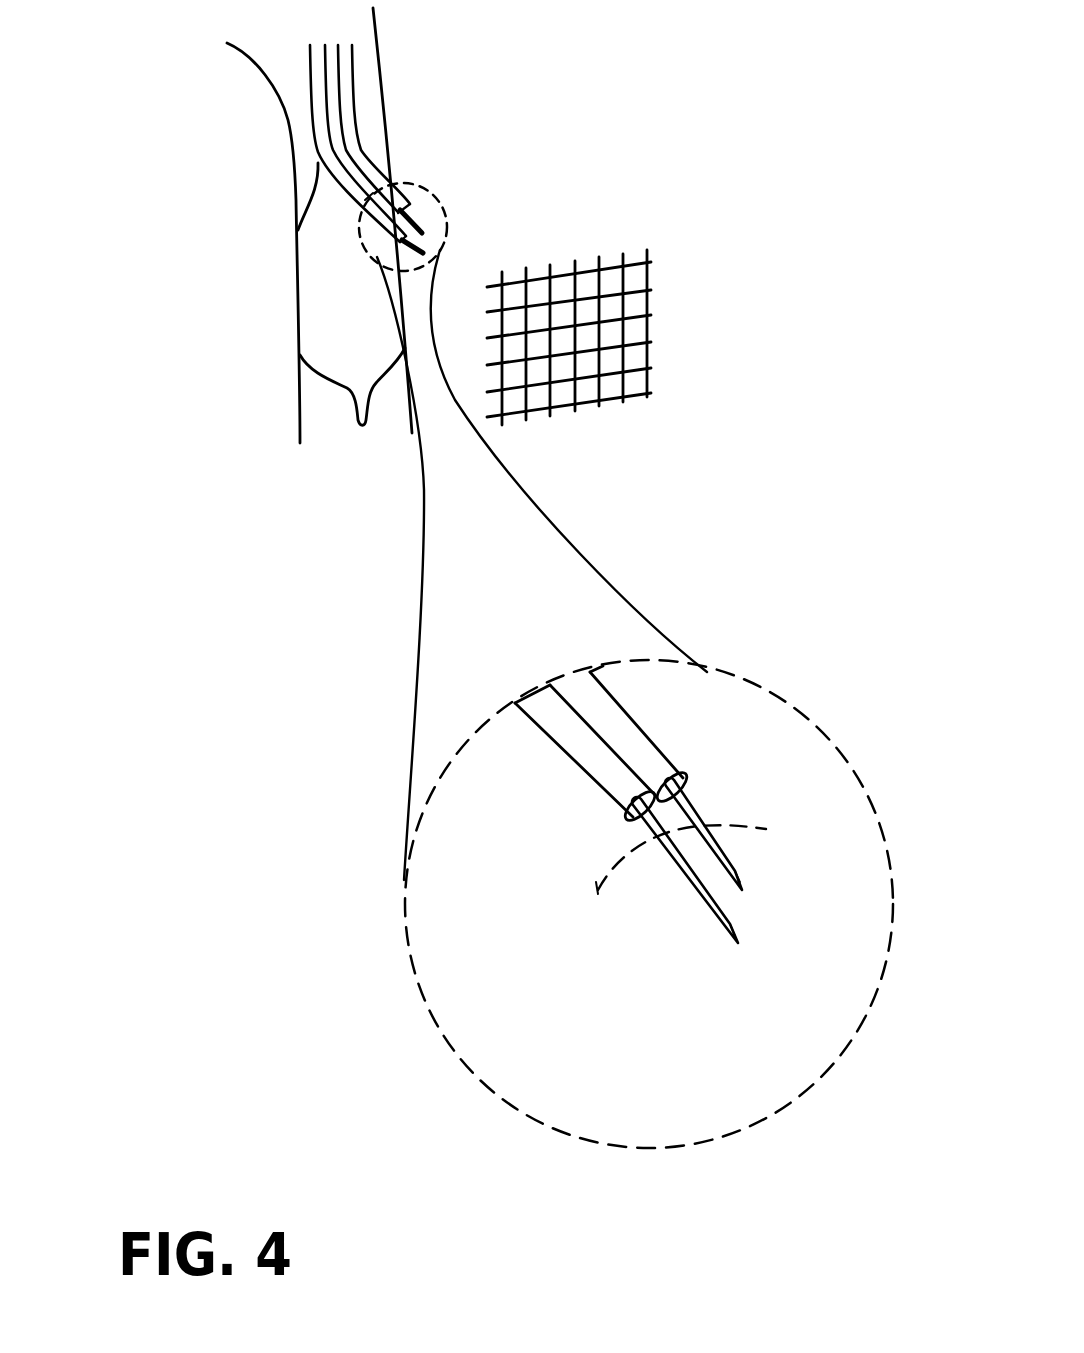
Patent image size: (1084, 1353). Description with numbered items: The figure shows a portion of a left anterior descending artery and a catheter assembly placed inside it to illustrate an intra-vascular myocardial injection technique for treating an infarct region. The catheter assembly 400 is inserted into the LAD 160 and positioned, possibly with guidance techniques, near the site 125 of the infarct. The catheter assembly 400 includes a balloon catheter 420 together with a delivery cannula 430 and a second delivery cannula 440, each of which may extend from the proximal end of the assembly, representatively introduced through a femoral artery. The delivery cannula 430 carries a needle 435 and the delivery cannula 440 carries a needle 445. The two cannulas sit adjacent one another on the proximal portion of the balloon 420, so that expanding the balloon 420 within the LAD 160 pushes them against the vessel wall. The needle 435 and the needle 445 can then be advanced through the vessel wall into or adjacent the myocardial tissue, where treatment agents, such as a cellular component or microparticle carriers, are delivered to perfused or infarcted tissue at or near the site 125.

The site 125 is at (649, 277).
The LAD 160 is at (387, 76).
The catheter assembly 400 is at (318, 167).
The balloon catheter 420 is at (317, 319).
The delivery cannula 430 is at (361, 150).
The needle 435 is at (425, 195).
The delivery cannula 440 is at (357, 167).
The needle 445 is at (433, 233).